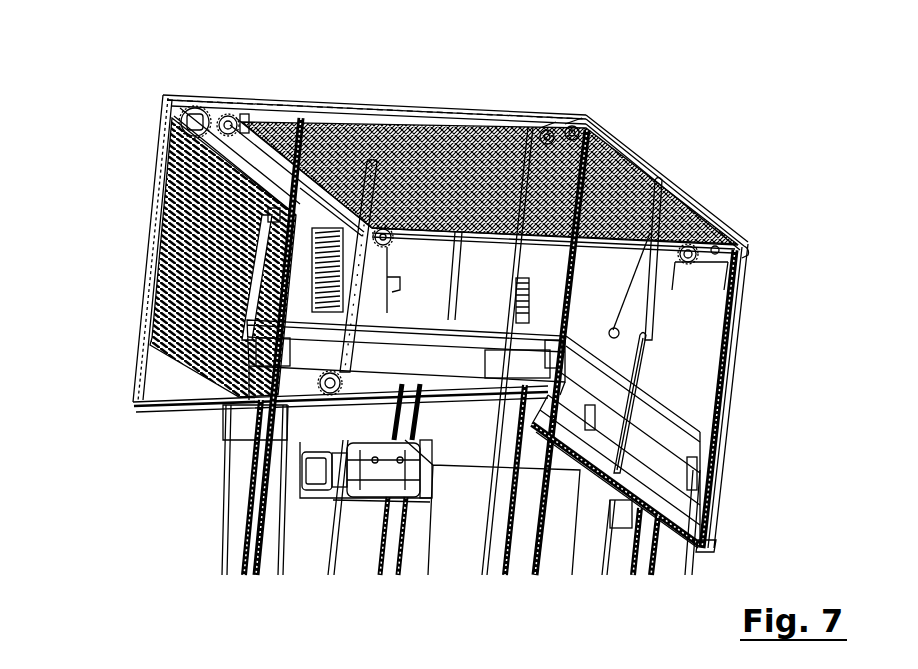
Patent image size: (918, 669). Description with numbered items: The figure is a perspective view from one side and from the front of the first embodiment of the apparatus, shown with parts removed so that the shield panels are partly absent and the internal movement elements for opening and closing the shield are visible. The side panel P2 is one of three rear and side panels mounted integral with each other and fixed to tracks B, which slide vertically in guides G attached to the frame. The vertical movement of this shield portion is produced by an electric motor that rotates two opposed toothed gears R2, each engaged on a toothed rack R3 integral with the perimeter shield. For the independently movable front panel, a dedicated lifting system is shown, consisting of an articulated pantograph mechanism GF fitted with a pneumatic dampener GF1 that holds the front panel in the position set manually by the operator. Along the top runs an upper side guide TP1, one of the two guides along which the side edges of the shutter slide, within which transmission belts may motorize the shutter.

The upper side guide TP1 is at (248, 113).
The panel P2 is at (143, 353).
The track B is at (309, 131).
The toothed gear R2 is at (300, 381).
The toothed rack R3 is at (376, 190).
The guide G is at (330, 384).
The articulated pantograph mechanism GF is at (657, 318).
The pneumatic dampener GF1 is at (610, 360).